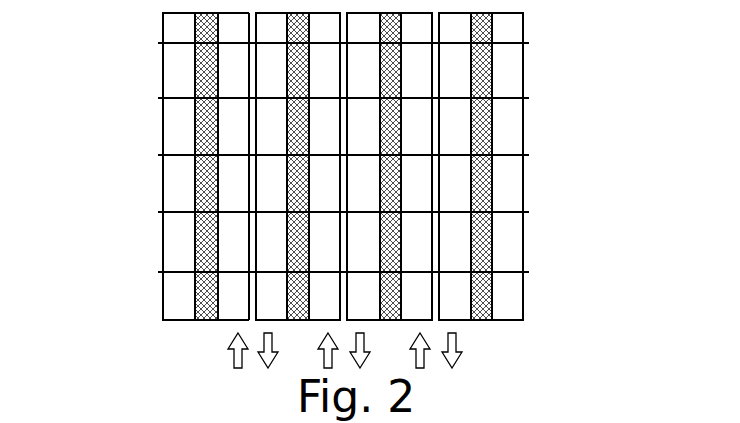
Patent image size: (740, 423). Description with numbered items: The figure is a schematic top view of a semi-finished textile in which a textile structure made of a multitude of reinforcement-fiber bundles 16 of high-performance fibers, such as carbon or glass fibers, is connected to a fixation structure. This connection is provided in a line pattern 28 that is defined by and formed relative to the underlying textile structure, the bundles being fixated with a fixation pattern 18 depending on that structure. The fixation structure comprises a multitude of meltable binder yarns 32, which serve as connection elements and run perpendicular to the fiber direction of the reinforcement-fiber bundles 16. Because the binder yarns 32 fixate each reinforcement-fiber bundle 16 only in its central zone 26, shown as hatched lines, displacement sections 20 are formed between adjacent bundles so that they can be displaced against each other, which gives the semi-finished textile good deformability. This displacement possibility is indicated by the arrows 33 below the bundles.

The reinforcement-fiber bundles 16 is at (510, 182).
The fixation pattern 18 is at (195, 228).
The displacement sections 20 is at (250, 316).
The central zone 26 is at (492, 118).
The line pattern 28 is at (140, 122).
The binder yarns 32 is at (512, 43).
The arrows 33 is at (236, 349).